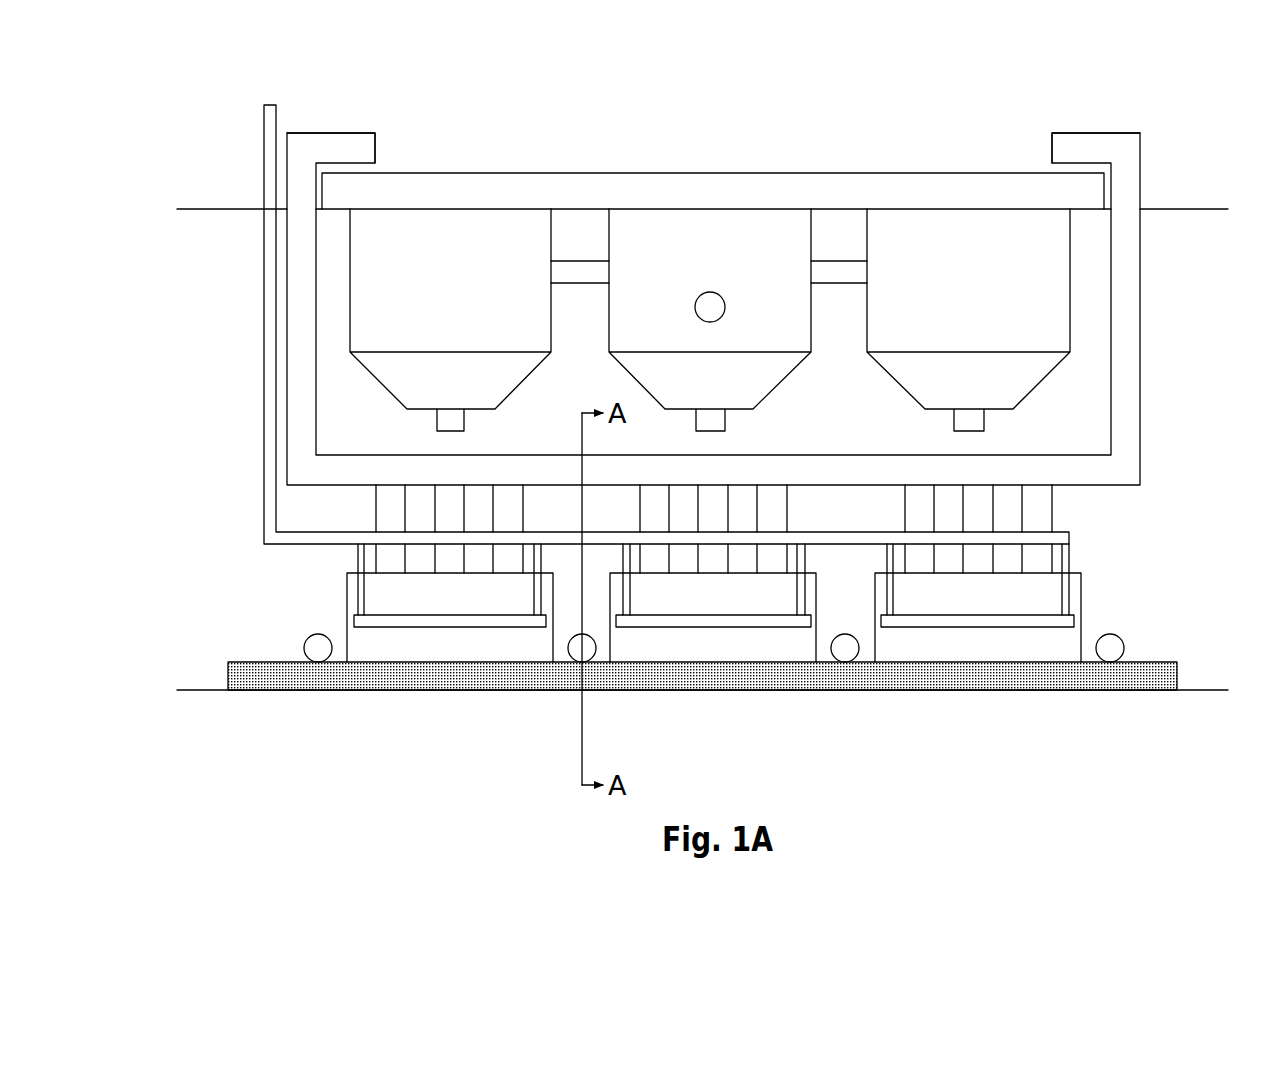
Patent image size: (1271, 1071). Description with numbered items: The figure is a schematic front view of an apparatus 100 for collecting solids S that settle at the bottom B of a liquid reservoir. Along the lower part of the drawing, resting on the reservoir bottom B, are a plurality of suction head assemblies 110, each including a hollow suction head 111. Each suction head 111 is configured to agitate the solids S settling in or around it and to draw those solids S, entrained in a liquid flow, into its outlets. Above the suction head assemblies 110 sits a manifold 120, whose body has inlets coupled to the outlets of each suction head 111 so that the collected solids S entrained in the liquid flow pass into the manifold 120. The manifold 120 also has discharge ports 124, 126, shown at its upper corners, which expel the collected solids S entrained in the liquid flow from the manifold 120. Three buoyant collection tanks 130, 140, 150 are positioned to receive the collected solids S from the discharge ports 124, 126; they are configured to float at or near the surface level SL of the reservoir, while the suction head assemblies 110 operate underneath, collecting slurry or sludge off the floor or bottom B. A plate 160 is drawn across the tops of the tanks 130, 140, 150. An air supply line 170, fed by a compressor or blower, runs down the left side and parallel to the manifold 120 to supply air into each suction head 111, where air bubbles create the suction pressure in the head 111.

The apparatus 100 is at (618, 137).
The suction head assembly 110 is at (445, 638).
The suction head 111 is at (347, 617).
The manifold 120 is at (855, 452).
The discharge port 124 is at (377, 148).
The discharge port 126 is at (1050, 148).
The collection tank 130 is at (470, 273).
The collection tank 140 is at (732, 273).
The collection tank 150 is at (986, 273).
The cover plate 160 is at (695, 185).
The air supply line 170 is at (270, 175).
The solids S is at (305, 680).
The bottom B is at (1185, 689).
The surface level SL is at (1158, 208).